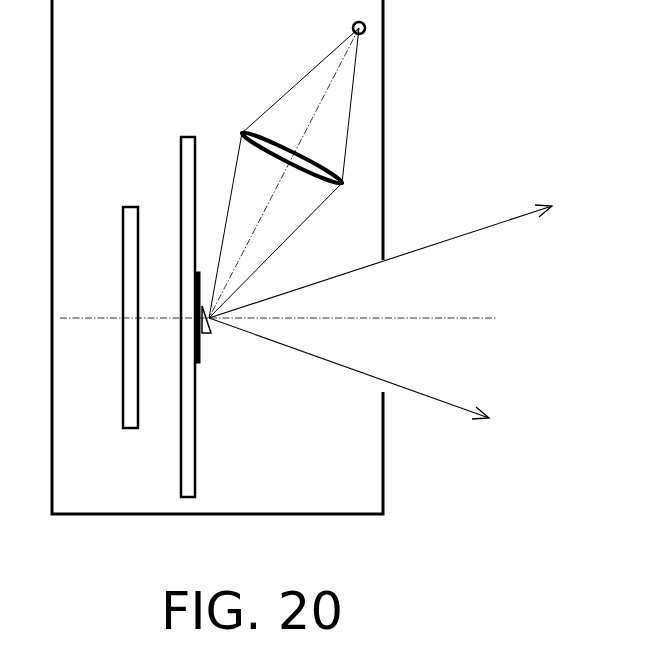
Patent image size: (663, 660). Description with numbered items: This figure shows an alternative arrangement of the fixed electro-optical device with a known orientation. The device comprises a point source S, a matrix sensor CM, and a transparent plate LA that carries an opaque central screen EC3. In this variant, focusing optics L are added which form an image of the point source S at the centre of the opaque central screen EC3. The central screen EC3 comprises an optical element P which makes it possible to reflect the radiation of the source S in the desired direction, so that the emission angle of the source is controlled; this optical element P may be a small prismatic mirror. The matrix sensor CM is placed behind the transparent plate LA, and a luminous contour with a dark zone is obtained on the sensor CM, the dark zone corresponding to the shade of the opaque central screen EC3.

The point source S is at (353, 27).
The focusing optics L is at (240, 131).
The matrix sensor CM is at (131, 272).
The transparent plate LA is at (195, 432).
The opaque central screen EC3 is at (200, 352).
The optical element P is at (213, 331).